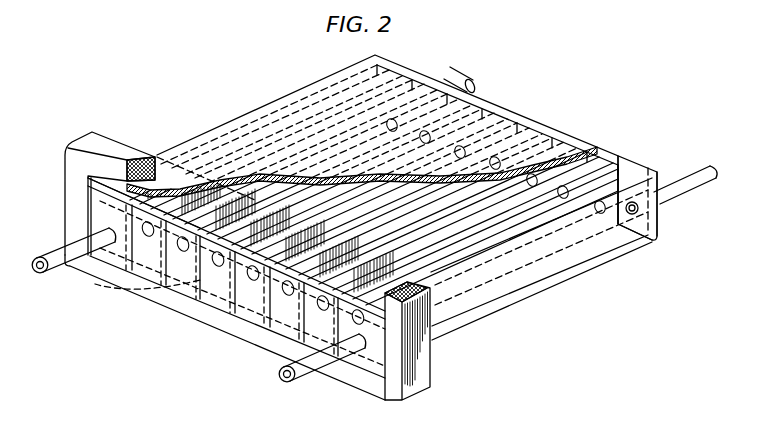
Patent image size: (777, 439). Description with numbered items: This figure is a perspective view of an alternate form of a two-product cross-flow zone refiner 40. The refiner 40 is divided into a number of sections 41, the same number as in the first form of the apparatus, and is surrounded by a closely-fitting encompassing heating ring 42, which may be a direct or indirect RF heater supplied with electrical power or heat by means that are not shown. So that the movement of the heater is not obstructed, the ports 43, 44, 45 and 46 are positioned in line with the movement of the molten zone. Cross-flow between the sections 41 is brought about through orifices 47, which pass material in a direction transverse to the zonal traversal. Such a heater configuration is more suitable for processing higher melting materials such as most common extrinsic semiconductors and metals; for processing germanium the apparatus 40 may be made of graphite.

The refiner 40 is at (657, 225).
The sections 41 is at (123, 247).
The heating ring 42 is at (428, 378).
The port 43 is at (46, 274).
The port 44 is at (296, 381).
The port 45 is at (471, 80).
The port 46 is at (704, 168).
The orifices 47 is at (221, 270).